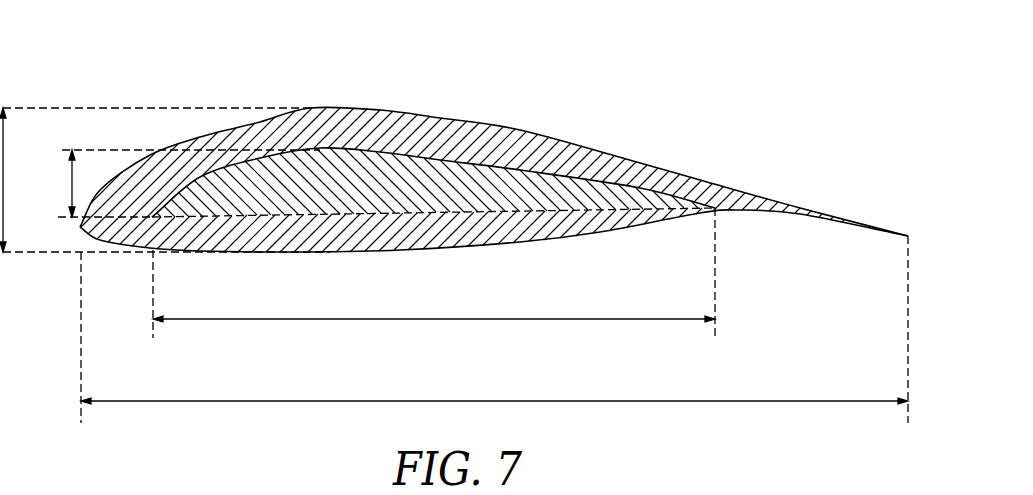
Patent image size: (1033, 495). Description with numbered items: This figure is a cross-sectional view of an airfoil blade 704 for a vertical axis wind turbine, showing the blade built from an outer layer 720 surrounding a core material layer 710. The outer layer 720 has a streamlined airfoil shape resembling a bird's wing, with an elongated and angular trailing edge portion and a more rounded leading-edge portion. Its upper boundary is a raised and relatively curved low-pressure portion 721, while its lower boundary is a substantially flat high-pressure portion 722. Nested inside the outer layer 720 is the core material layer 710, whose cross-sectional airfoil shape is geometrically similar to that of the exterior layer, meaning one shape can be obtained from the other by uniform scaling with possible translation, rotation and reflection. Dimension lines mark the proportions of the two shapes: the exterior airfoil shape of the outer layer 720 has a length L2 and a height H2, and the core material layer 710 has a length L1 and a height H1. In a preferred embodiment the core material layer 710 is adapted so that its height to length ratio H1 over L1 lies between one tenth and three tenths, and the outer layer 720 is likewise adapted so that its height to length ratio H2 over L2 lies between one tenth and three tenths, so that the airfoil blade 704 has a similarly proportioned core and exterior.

The airfoil blade 704 is at (124, 69).
The core material layer 710 is at (571, 185).
The outer layer 720 is at (505, 128).
The low-pressure portion 721 is at (345, 108).
The high-pressure portion 722 is at (390, 251).
The core airfoil height H1 is at (71, 190).
The exterior airfoil height H2 is at (5, 177).
The core airfoil length L1 is at (540, 319).
The exterior airfoil length L2 is at (555, 400).